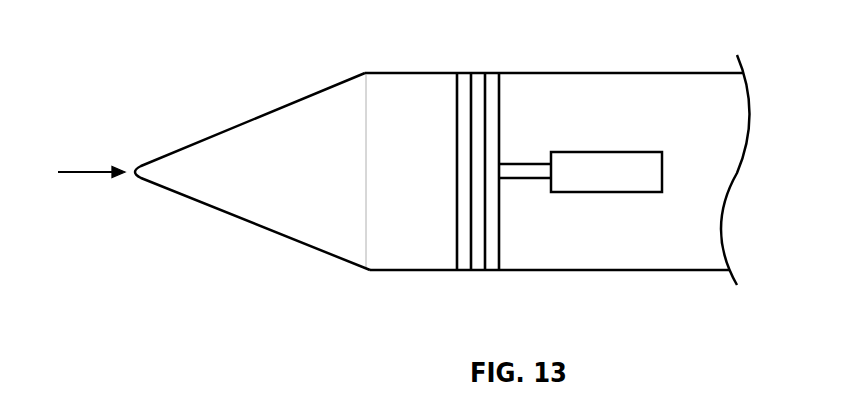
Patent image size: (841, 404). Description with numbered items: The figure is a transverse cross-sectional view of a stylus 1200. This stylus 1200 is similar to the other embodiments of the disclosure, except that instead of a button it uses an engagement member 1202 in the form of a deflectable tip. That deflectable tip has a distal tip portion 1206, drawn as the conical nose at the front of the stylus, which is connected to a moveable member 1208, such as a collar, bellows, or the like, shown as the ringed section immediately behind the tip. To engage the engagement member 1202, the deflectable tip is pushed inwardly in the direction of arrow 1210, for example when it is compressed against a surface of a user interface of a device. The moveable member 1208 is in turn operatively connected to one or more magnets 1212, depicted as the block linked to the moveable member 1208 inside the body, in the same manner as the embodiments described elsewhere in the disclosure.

The stylus 1200 is at (404, 172).
The engagement member 1202 is at (431, 172).
The distal tip portion 1206 is at (358, 252).
The moveable member 1208 is at (478, 260).
The arrow 1210 is at (83, 172).
The magnets 1212 is at (605, 162).